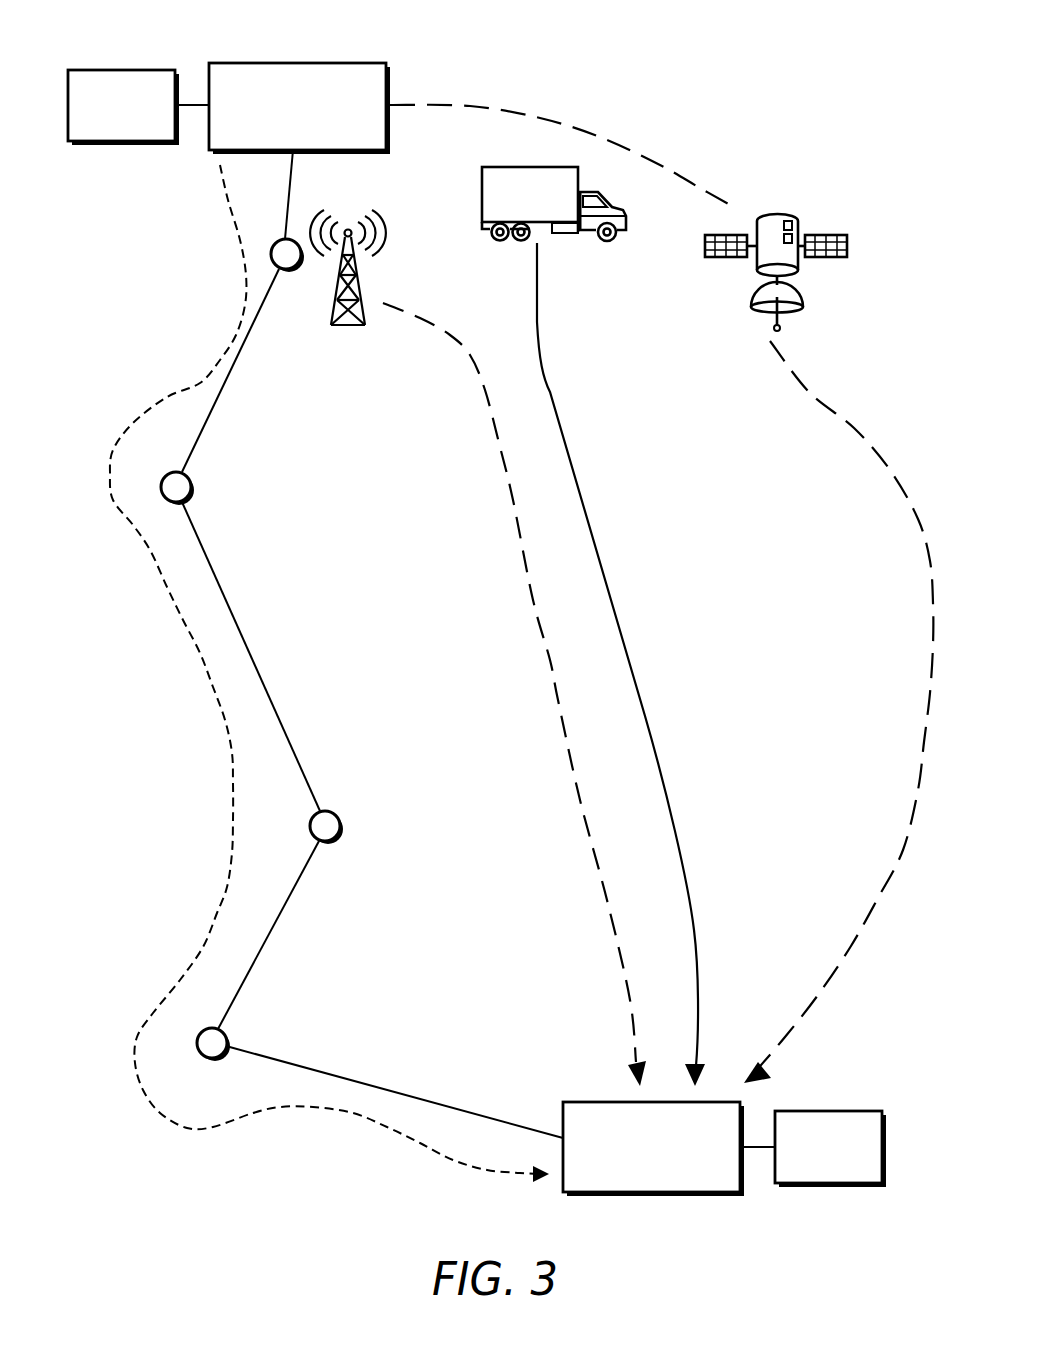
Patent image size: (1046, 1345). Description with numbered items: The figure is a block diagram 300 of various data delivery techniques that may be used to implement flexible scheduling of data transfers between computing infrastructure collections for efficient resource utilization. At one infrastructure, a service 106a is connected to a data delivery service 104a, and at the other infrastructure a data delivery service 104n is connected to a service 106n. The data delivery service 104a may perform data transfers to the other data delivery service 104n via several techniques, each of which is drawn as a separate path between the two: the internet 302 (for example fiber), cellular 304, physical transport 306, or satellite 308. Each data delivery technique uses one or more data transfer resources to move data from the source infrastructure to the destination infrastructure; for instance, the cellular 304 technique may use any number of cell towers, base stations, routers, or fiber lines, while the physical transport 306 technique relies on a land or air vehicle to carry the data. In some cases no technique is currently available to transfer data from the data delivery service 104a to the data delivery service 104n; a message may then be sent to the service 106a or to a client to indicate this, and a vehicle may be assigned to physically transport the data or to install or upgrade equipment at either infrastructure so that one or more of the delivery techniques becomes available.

The data delivery environment 300 is at (673, 56).
The internet 302 is at (233, 790).
The cellular 304 is at (551, 677).
The physical transport 306 is at (641, 706).
The satellite 308 is at (847, 418).
The data delivery service 104a is at (299, 108).
The data delivery service 104n is at (669, 1149).
The service 106a is at (138, 107).
The service 106n is at (830, 1149).